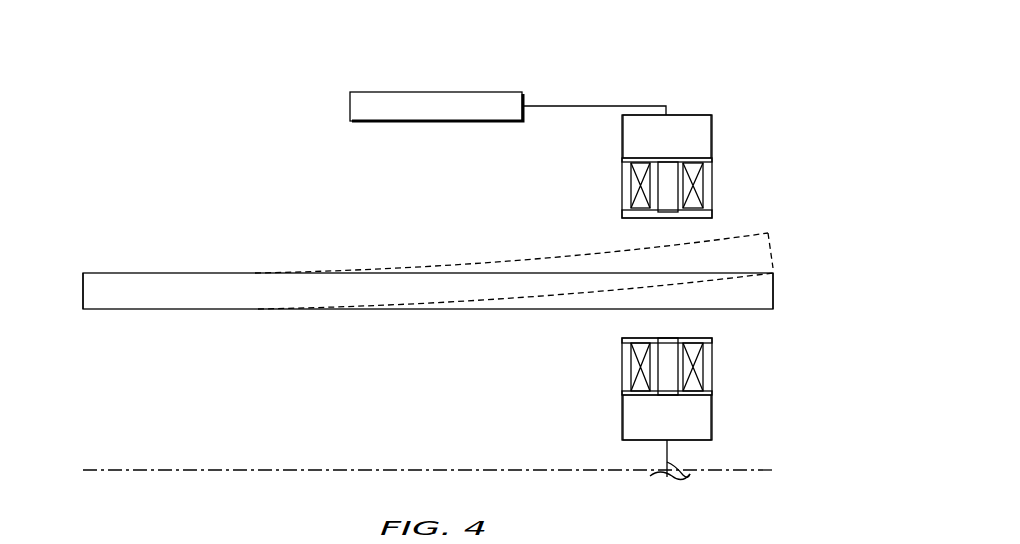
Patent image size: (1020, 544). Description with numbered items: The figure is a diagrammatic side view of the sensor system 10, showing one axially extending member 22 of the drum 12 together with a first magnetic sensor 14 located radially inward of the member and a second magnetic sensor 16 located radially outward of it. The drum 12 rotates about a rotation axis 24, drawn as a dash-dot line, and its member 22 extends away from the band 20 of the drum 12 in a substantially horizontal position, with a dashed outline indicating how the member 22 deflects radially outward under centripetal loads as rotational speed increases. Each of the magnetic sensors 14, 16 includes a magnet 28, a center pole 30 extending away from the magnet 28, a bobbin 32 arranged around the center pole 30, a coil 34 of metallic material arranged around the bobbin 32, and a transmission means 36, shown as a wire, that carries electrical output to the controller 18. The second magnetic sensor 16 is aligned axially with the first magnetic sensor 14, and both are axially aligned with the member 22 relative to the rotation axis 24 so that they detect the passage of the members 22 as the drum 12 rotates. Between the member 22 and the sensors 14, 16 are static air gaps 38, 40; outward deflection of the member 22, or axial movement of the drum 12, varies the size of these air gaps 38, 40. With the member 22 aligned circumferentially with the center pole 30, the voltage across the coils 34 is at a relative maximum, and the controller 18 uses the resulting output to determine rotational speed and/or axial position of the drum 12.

The sensor system 10 is at (100, 114).
The drum 12 is at (260, 262).
The first magnetic sensor 14 is at (606, 418).
The second magnetic sensor 16 is at (602, 163).
The controller 18 is at (400, 92).
The band 20 is at (180, 314).
The axially extending member 22 is at (764, 318).
The rotation axis 24 is at (321, 470).
The magnet 28 is at (711, 135).
The center pole 30 is at (670, 208).
The bobbin 32 is at (697, 216).
The coil 34 is at (697, 182).
The transmission means 36 is at (587, 106).
The air gap 38 is at (627, 330).
The air gap 40 is at (622, 234).